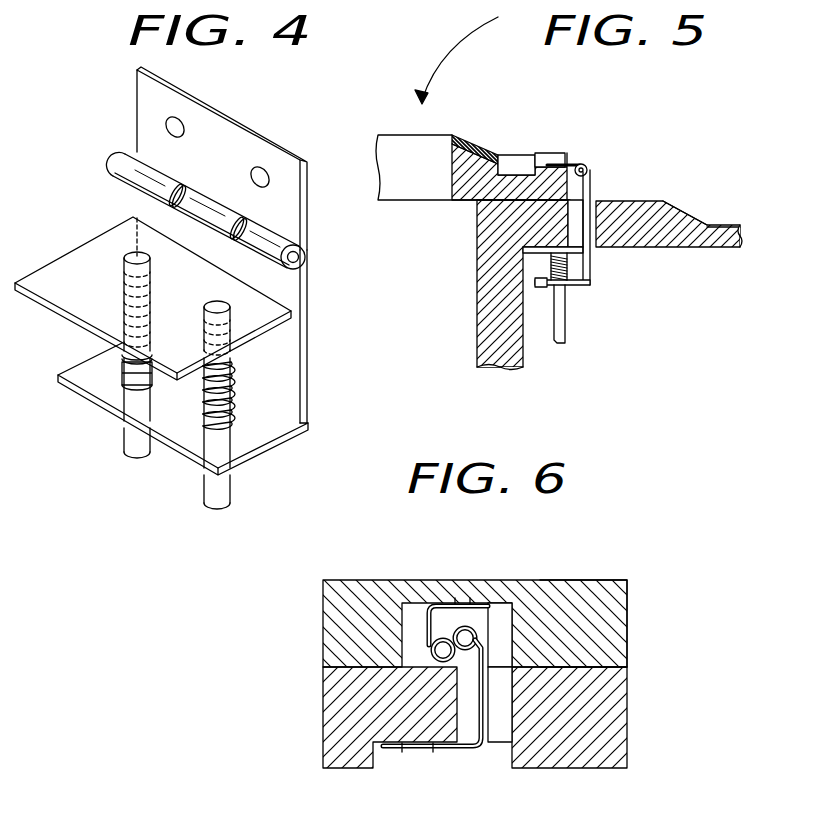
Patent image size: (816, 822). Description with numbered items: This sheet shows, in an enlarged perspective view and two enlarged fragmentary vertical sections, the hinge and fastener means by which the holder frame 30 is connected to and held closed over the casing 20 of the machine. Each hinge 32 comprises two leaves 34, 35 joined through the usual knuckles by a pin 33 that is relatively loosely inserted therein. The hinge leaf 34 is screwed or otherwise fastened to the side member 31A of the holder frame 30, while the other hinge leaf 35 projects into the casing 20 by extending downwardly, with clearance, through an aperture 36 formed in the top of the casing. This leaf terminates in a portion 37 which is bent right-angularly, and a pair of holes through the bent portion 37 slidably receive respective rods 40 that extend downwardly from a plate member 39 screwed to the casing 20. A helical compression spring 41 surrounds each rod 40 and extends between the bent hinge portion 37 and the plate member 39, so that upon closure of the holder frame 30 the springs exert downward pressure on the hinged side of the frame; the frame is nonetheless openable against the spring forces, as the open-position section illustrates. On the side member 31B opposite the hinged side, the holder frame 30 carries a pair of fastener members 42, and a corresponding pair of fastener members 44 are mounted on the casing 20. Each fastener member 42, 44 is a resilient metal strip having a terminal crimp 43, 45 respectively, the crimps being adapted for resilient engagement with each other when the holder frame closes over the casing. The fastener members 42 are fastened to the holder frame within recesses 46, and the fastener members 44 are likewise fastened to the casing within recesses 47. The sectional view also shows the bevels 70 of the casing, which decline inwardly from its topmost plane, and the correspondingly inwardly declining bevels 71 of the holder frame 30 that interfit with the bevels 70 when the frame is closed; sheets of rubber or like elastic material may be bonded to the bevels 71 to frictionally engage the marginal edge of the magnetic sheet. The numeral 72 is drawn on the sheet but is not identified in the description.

In FIG. 5, the casing 20 is at (670, 236).
In FIG. 6, the casing 20 is at (568, 757).
In FIG. 5, the holder frame 30 is at (462, 178).
In FIG. 6, the holder frame 30 is at (550, 598).
In FIG. 5, the side member 31A is at (540, 165).
In FIG. 6, the side member 31B is at (603, 593).
In FIG. 4, the hinge 32 is at (235, 143).
In FIG. 4, the pin 33 is at (305, 259).
In FIG. 5, the pin 33 is at (585, 164).
In FIG. 4, the hinge leaf 34 is at (200, 117).
In FIG. 4, the hinge leaf 35 is at (292, 333).
In FIG. 5, the hinge leaf 35 is at (591, 273).
In FIG. 5, the aperture 36 is at (567, 223).
In FIG. 4, the bent portion 37 is at (257, 436).
In FIG. 5, the bent portion 37 is at (547, 283).
In FIG. 4, the plate member 39 is at (72, 258).
In FIG. 5, the plate member 39 is at (525, 251).
In FIG. 5, the rod 40 is at (560, 341).
In FIG. 5, the helical compression spring 41 is at (566, 277).
In FIG. 6, the fastener member 42 is at (438, 607).
In FIG. 6, the terminal crimp 43 is at (430, 650).
In FIG. 6, the fastener member 44 is at (457, 748).
In FIG. 6, the terminal crimp 45 is at (463, 628).
In FIG. 6, the recess 46 is at (497, 620).
In FIG. 6, the recess 47 is at (497, 718).
In FIG. 5, the bevel 70 is at (680, 203).
In FIG. 5, the bevel 71 is at (460, 147).
In FIG. 5, the recess 72 is at (487, 149).